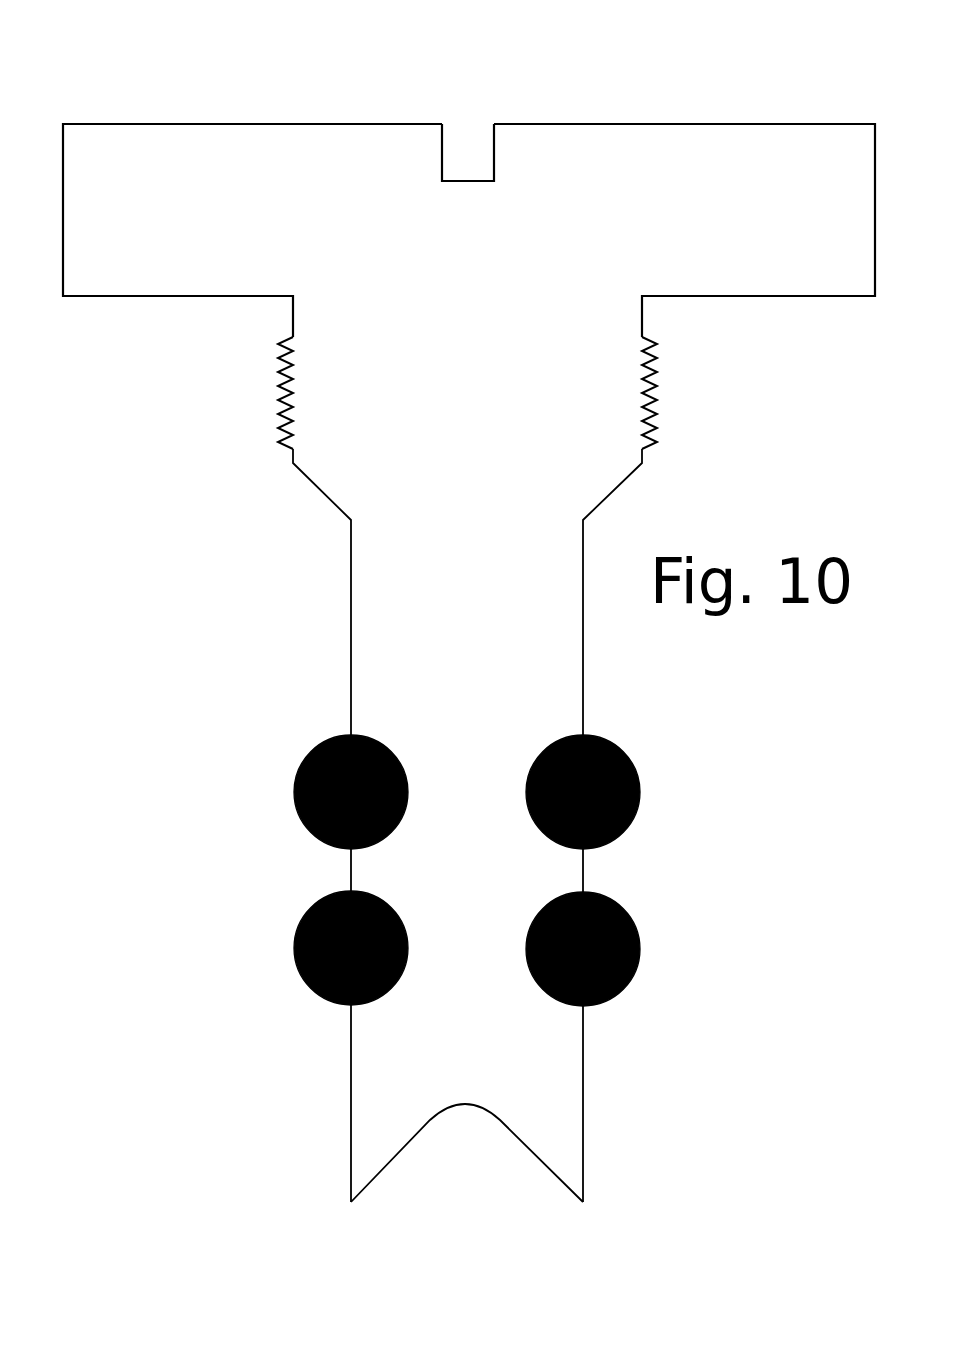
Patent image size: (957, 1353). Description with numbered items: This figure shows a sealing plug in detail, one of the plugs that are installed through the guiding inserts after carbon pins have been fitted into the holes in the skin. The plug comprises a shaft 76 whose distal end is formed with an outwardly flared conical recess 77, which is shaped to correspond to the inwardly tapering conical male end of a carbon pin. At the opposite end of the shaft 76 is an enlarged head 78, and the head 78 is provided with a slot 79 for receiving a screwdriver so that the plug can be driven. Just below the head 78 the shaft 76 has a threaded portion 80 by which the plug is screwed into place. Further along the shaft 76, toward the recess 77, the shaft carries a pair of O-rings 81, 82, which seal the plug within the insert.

The shaft 76 is at (351, 607).
The outwardly flared conical recess 77 is at (462, 1170).
The head 78 is at (221, 124).
The slot 79 is at (467, 148).
The threaded portion 80 is at (655, 423).
The O-ring 81 is at (294, 790).
The O-ring 82 is at (640, 950).